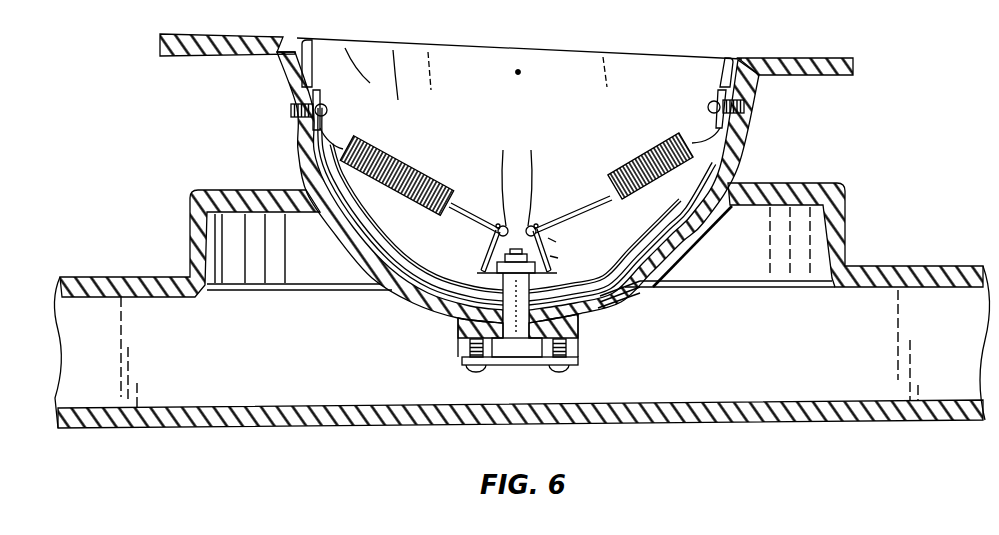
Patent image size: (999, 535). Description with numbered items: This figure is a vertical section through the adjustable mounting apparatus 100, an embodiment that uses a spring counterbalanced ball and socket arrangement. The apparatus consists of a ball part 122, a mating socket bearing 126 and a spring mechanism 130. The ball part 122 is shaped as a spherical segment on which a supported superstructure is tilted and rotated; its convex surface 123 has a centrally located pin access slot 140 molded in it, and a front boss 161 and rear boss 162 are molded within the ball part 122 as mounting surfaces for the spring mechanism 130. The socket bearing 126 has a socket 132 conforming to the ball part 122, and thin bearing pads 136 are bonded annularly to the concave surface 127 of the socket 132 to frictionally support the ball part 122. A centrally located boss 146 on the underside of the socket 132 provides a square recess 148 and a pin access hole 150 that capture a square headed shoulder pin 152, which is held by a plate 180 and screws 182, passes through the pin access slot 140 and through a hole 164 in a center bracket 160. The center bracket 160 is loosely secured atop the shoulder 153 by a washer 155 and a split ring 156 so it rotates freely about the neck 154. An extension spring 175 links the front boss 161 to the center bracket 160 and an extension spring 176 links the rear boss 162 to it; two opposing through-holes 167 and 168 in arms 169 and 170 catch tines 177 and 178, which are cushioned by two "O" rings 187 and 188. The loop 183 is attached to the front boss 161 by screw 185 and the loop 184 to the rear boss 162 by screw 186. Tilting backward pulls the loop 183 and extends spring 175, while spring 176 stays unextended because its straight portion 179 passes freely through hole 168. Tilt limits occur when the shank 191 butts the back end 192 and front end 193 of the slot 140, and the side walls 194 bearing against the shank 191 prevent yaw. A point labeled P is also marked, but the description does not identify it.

The adjustable mounting apparatus 100 is at (138, 135).
The ball part 122 is at (288, 145).
The convex surface 123 is at (407, 298).
The socket bearing 126 is at (320, 248).
The concave surface 127 is at (733, 172).
The spring mechanism 130 is at (538, 146).
The socket 132 is at (340, 188).
The bearing pads 136 is at (335, 250).
The pin access slot 140 is at (615, 296).
The boss 146 is at (460, 348).
The square recess 148 is at (530, 357).
The pin access hole 150 is at (458, 335).
The shoulder pin 152 is at (516, 352).
The shoulder 153 is at (452, 284).
The neck 154 is at (541, 292).
The washer 155 is at (553, 256).
The split ring 156 is at (557, 240).
The center bracket 160 is at (492, 240).
The front boss 161 is at (310, 88).
The rear boss 162 is at (725, 66).
The hole 164 is at (529, 293).
The through-hole 167 is at (500, 226).
The through-hole 168 is at (536, 226).
The arm 169 is at (476, 230).
The arm 170 is at (566, 226).
The extension spring 175 is at (414, 170).
The extension spring 176 is at (626, 155).
The tine 177 is at (518, 222).
The tine 178 is at (527, 222).
The straight portion 179 is at (590, 194).
The plate 180 is at (582, 362).
The screws 182 is at (472, 372).
The loop 183 is at (318, 92).
The loop 184 is at (715, 88).
The screw 185 is at (327, 110).
The screw 186 is at (709, 105).
The "O" ring 187 is at (510, 222).
The "O" ring 188 is at (531, 222).
The shank 191 is at (578, 326).
The back end 192 is at (622, 286).
The front end 193 is at (404, 322).
The side walls 194 is at (609, 305).
The pivot point P is at (517, 83).